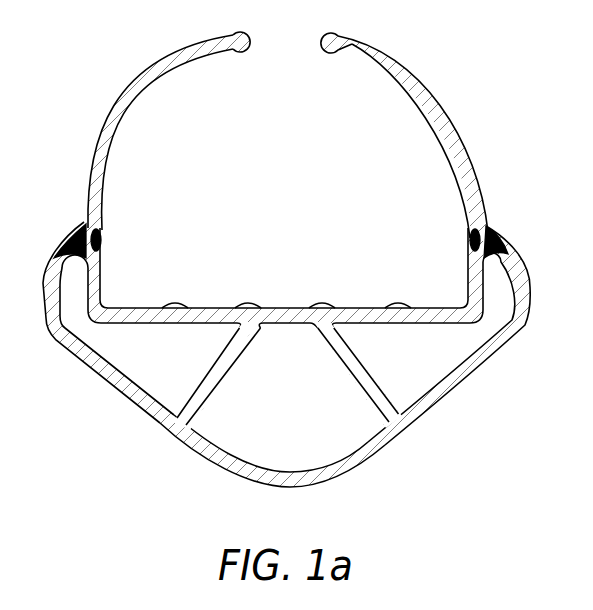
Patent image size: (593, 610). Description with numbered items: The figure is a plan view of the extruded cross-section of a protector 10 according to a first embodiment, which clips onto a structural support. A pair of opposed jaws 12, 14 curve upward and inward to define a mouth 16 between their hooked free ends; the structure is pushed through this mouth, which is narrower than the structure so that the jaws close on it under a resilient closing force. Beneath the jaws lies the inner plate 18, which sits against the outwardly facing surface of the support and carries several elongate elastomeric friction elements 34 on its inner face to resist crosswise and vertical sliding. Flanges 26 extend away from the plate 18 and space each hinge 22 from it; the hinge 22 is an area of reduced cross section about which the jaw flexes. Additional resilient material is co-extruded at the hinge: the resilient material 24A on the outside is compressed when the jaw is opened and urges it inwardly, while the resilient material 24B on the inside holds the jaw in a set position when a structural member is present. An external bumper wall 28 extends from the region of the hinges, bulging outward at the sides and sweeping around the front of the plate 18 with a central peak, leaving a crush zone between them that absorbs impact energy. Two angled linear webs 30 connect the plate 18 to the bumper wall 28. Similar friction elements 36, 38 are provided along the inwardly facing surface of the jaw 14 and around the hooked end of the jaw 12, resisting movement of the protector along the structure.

The protector 10 is at (506, 84).
The jaw 12 is at (155, 83).
The jaw 14 is at (401, 72).
The mouth 16 is at (305, 38).
The inner plate 18 is at (290, 322).
The hinge 22 is at (65, 248).
The resilient material 24A is at (72, 232).
The resilient material 24B is at (103, 236).
The flange 26 is at (473, 278).
The external bumper wall 28 is at (284, 478).
The linear web 30 is at (218, 375).
The friction element 34 is at (248, 306).
The friction element 36 is at (427, 118).
The friction element 38 is at (262, 43).